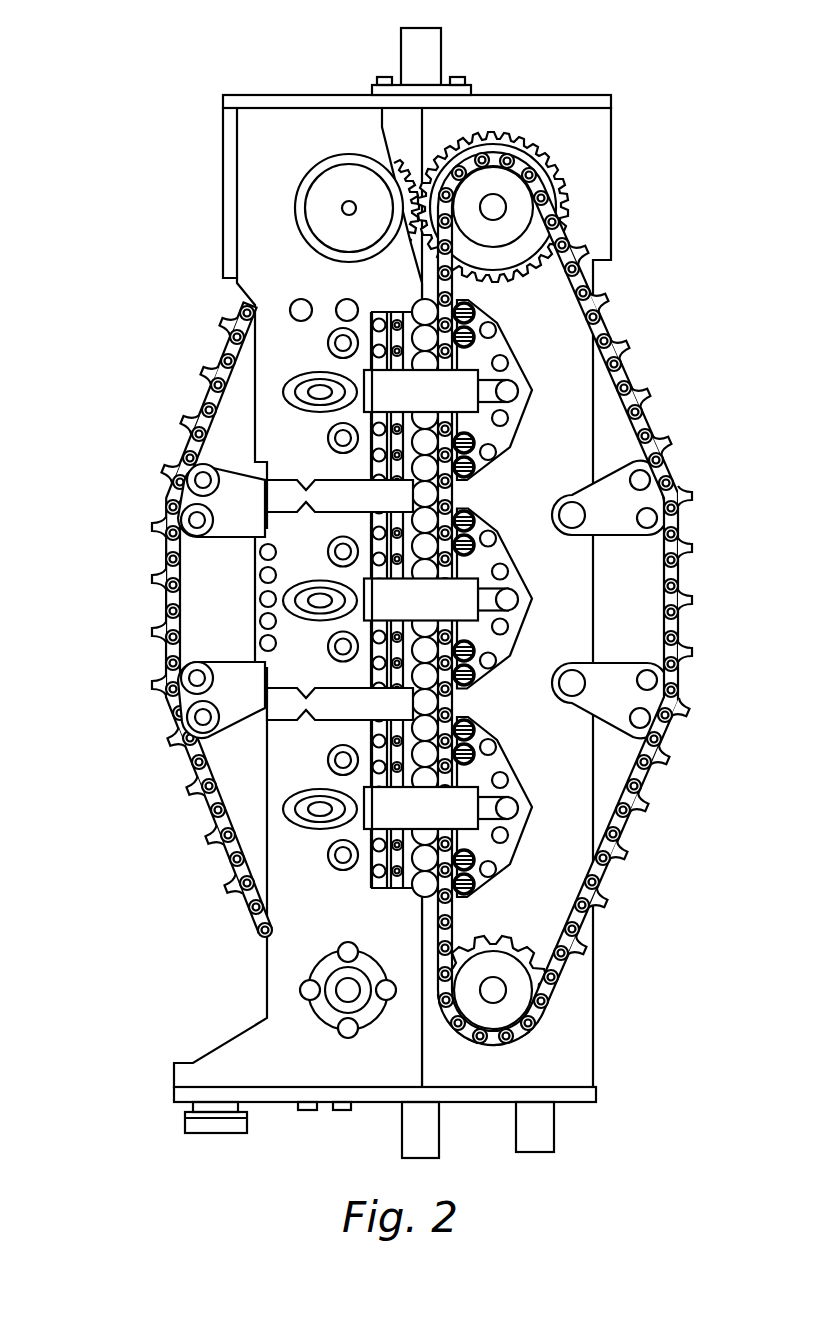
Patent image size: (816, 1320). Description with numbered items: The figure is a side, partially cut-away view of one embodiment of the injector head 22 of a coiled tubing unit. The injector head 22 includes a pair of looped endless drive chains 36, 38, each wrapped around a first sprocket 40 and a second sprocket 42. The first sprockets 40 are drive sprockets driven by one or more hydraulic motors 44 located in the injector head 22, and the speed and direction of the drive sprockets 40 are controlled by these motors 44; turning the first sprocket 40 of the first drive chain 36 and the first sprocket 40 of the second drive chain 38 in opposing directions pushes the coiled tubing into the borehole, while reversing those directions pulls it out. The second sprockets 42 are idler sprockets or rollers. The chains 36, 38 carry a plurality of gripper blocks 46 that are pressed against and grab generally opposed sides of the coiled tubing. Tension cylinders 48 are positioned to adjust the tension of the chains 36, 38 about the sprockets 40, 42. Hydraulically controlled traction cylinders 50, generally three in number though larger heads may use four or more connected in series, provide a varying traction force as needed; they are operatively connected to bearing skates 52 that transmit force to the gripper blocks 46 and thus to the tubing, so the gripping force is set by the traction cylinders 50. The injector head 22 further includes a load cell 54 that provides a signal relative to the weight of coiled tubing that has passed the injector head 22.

The injector head 22 is at (124, 44).
The first drive chain 36 is at (188, 619).
The second drive chain 38 is at (680, 597).
The first sprocket 40 is at (533, 262).
The second sprocket 42 is at (518, 947).
The hydraulic motor 44 is at (328, 170).
The gripper block 46 is at (180, 414).
The tension cylinder 48 is at (320, 487).
The traction cylinder 50 is at (457, 380).
The bearing skate 52 is at (477, 466).
The load cell 54 is at (217, 1133).